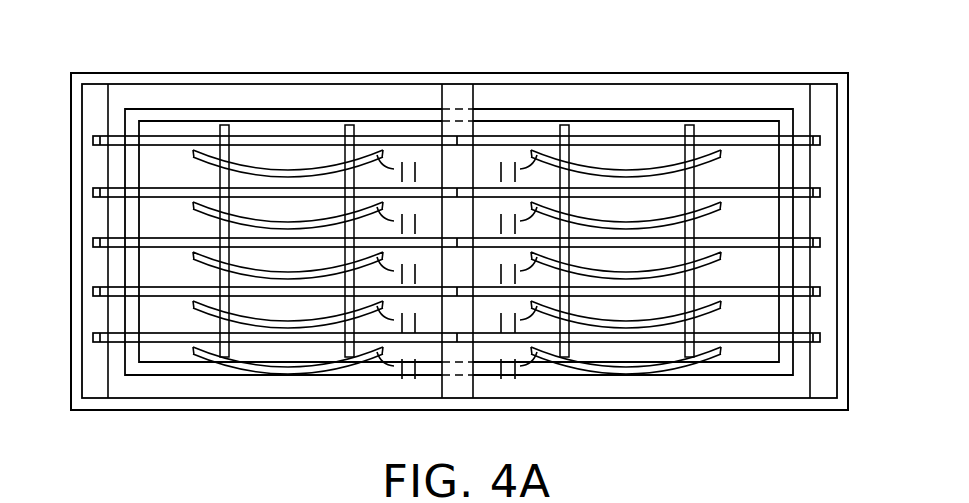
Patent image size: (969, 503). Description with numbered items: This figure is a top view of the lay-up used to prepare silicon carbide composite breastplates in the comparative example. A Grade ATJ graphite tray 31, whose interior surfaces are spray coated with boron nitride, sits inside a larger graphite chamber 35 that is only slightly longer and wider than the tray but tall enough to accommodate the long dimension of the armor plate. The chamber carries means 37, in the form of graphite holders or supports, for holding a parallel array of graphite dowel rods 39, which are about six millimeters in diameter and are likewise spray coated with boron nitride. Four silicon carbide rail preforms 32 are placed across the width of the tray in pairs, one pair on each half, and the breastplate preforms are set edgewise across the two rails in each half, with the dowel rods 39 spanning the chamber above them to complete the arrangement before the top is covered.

The graphite tray 31 is at (182, 115).
The silicon carbide rail preforms 32 is at (352, 125).
The graphite chamber 35 is at (730, 80).
The means for supporting dowel rods 37 is at (93, 100).
The graphite dowel rods 39 is at (93, 140).